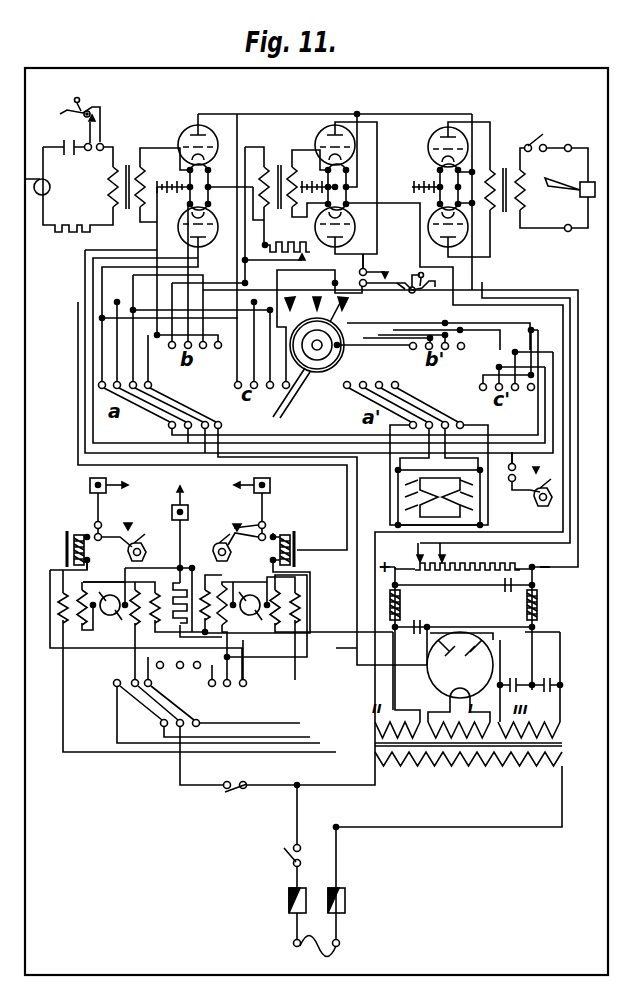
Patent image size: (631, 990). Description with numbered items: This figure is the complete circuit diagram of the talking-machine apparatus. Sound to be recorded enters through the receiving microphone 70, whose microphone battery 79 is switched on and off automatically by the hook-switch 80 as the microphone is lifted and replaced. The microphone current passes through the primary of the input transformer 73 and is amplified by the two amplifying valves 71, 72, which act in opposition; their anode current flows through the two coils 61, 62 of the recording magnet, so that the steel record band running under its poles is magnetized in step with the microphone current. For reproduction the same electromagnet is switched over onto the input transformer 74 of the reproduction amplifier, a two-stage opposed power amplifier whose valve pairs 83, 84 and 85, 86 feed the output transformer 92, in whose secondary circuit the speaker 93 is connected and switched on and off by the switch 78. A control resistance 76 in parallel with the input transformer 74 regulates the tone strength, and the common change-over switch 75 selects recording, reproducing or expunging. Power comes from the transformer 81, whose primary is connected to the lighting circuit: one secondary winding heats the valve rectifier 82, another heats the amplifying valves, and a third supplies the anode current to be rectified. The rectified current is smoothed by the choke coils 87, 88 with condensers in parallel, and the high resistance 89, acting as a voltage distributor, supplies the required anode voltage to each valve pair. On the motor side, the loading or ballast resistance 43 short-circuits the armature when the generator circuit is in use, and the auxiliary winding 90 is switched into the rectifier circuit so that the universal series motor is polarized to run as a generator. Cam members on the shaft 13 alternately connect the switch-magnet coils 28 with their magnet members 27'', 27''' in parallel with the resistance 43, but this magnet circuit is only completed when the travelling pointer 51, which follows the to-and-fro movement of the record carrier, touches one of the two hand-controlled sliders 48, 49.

The receiving microphone 70 is at (50, 183).
The amplifying valve 71 is at (187, 233).
The amplifying valve 72 is at (187, 133).
The input transformer 73 is at (125, 163).
The input transformer of the reproduction amplifier 74 is at (278, 160).
The change-over switch 75 is at (323, 368).
The control resistance 76 is at (290, 234).
The switch 78 is at (557, 177).
The microphone battery 79 is at (72, 146).
The hook-switch 80 is at (82, 103).
The transformer 81 is at (470, 748).
The valve rectifier 82 is at (462, 640).
The vacuum tube 83 is at (325, 250).
The vacuum tube 84 is at (323, 136).
The amplifying valve 85 is at (435, 235).
The amplifying valve 86 is at (435, 139).
The choke coil 87 is at (401, 604).
The choke coil 88 is at (538, 605).
The high resistance 89 is at (468, 563).
The output transformer 92 is at (503, 167).
The reproduction device or speaker 93 is at (579, 194).
The shaft 13 is at (326, 520).
The resistance 28 is at (63, 533).
The switch magnet coil 27'' is at (47, 549).
The switch magnet coil 27''' is at (316, 549).
The loading resistance 43 is at (177, 583).
The hand controlled slider 48 is at (90, 486).
The hand controlled slider 49 is at (270, 484).
The pointer 51 is at (188, 510).
The coil of recording magnet 61 is at (403, 483).
The coil of recording magnet 62 is at (473, 493).
The auxiliary winding 90 is at (130, 628).